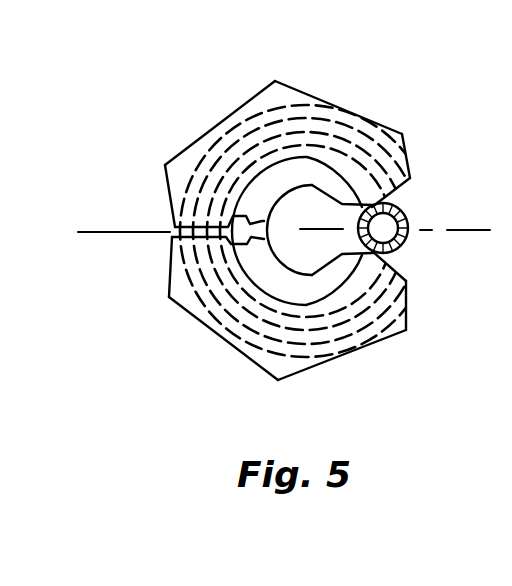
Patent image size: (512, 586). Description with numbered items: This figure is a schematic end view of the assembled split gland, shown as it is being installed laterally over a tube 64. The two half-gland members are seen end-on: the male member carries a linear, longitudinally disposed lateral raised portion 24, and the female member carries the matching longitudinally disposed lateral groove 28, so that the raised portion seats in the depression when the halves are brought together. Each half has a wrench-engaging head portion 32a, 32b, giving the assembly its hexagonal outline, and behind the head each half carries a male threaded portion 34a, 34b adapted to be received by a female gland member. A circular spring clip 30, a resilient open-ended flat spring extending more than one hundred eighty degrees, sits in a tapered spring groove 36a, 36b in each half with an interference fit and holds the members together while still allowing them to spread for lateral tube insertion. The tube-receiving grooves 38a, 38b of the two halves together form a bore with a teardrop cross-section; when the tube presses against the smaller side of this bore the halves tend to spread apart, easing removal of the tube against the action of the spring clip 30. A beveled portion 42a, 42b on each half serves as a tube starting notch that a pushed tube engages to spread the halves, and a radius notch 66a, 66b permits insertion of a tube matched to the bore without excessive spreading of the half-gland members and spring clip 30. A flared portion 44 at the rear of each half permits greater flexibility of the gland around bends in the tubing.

The lateral raised portion 24 is at (235, 248).
The lateral groove 28 is at (240, 215).
The circular spring clip 30 is at (247, 128).
The wrench-engaging head portion 32a is at (203, 140).
The wrench-engaging head portion 32b is at (193, 320).
The male threaded portion 34a is at (404, 133).
The male threaded portion 34b is at (390, 330).
The spring groove 36a is at (370, 121).
The spring groove 36b is at (250, 320).
The tube-receiving groove 38a is at (320, 152).
The tube-receiving groove 38b is at (337, 295).
The beveled portion 42a is at (400, 184).
The beveled portion 42b is at (404, 278).
The flared portion 44 is at (293, 182).
The tube 64 is at (406, 240).
The radius notch 66a is at (172, 228).
The radius notch 66b is at (172, 236).